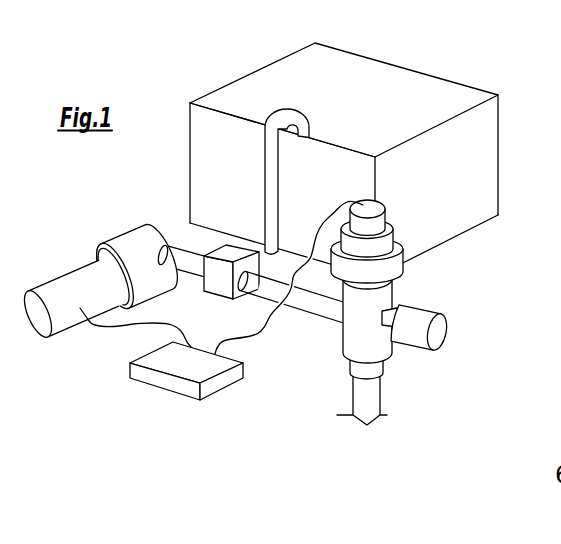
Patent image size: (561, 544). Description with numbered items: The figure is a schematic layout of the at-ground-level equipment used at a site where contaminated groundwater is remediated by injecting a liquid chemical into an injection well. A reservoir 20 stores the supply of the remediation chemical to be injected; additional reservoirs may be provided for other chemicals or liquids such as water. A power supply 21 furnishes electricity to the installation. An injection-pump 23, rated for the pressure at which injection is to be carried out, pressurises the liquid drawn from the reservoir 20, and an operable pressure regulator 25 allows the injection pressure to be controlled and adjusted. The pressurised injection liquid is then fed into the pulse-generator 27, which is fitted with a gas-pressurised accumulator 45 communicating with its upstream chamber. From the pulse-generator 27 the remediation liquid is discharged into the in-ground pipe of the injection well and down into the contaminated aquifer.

The reservoir 20 is at (257, 92).
The power supply 21 is at (223, 383).
The injection-pump 23 is at (122, 240).
The pressure regulator 25 is at (223, 253).
The pulse-generator 27 is at (348, 324).
The gas-pressurised accumulator 45 is at (421, 314).